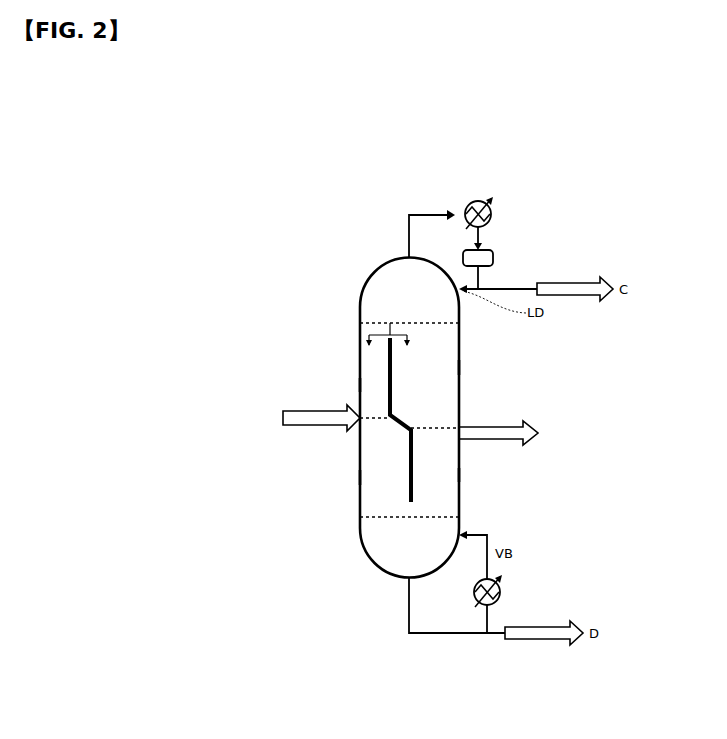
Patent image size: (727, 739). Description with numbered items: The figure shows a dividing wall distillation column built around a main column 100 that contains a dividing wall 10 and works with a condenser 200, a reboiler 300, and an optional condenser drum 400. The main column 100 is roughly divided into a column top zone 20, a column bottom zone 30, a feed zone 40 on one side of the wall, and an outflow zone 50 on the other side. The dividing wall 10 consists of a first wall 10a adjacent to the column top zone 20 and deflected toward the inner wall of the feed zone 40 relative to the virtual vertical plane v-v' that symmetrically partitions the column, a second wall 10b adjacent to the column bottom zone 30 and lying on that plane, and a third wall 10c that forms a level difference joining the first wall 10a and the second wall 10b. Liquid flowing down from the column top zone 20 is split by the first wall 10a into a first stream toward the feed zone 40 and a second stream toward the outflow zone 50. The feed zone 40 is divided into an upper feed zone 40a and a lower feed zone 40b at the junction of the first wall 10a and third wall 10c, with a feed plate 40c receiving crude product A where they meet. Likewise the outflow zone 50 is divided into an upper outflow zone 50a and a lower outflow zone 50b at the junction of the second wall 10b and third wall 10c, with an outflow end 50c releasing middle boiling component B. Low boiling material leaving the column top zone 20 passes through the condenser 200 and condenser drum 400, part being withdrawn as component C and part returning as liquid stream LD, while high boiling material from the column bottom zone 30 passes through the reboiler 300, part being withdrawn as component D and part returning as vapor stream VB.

The main column 100 is at (379, 265).
The column top zone 20 is at (375, 295).
The column bottom zone 30 is at (378, 548).
The dividing wall 10 is at (396, 399).
The first wall 10a is at (385, 378).
The second wall 10b is at (405, 500).
The third wall 10c is at (393, 432).
The feed zone 40 is at (260, 377).
The upper feed zone 40a is at (360, 385).
The lower feed zone 40b is at (360, 478).
The feed plate 40c is at (376, 421).
The outflow zone 50 is at (565, 373).
The upper outflow zone 50a is at (452, 368).
The lower outflow zone 50b is at (459, 475).
The outflow end 50c is at (459, 403).
The condenser 200 is at (497, 218).
The reboiler 300 is at (500, 600).
The condenser drum 400 is at (494, 258).